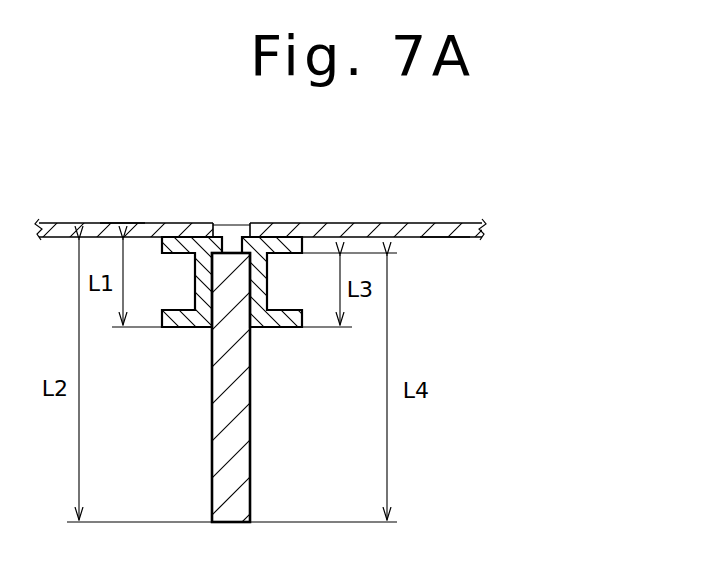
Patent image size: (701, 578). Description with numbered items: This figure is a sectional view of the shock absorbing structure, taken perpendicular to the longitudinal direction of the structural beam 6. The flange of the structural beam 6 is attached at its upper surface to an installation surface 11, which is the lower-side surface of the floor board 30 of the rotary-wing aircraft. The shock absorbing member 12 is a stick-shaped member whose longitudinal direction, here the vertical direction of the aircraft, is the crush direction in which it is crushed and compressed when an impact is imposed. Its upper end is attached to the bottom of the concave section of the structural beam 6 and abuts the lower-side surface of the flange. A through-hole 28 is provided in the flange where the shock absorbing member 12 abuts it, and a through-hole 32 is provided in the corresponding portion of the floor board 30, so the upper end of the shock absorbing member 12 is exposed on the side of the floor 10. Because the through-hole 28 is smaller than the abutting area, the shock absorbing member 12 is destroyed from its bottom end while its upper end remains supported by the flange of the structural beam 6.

The structural beam 6 is at (275, 330).
The floor 10 is at (430, 222).
The installation surface 11 is at (447, 238).
The shock absorbing member 12 is at (221, 428).
The through-hole 28 is at (236, 241).
The floor board 30 is at (121, 222).
The through-hole 32 is at (221, 221).